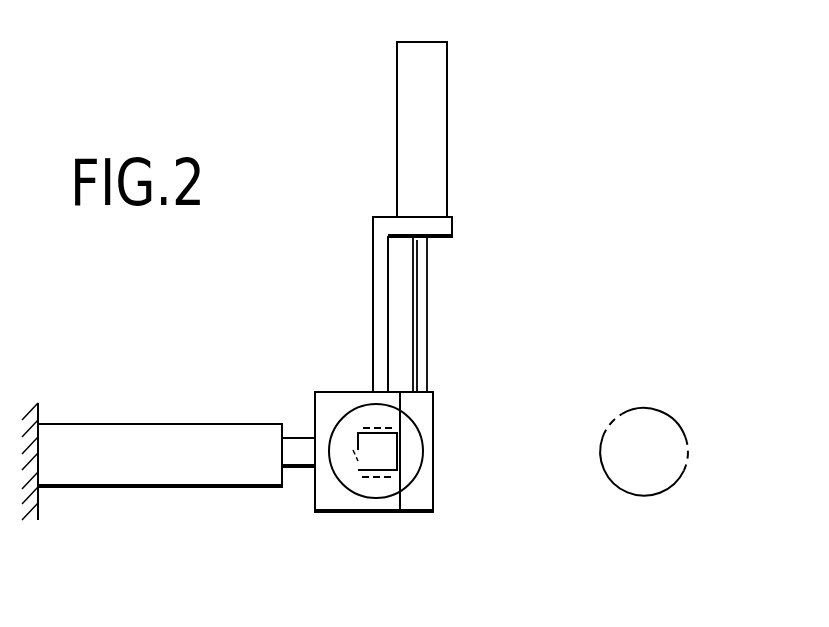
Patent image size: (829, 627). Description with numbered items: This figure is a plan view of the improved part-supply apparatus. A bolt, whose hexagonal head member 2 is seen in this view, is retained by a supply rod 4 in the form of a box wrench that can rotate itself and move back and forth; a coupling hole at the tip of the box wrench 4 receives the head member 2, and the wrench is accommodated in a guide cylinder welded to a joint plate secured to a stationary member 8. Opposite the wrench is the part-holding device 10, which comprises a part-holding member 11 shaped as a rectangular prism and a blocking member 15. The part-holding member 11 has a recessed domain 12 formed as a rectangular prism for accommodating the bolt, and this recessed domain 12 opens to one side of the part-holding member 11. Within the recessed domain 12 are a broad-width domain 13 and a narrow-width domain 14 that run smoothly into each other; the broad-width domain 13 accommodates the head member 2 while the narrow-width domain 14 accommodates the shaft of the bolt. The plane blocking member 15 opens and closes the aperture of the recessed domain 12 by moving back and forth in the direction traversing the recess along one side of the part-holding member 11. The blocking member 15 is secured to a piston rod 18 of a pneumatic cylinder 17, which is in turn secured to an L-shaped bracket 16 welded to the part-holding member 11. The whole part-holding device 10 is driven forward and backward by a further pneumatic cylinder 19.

The head member 2 is at (372, 478).
The supply rod 4 is at (647, 410).
The stationary member 8 is at (42, 458).
The part-holding device 10 is at (296, 517).
The part-holding member 11 is at (315, 514).
The recessed domain 12 is at (336, 443).
The broad-width domain 13 is at (362, 422).
The narrow-width domain 14 is at (384, 463).
The blocking member 15 is at (434, 421).
The L-shaped bracket 16 is at (373, 302).
The pneumatic cylinder 17 is at (397, 122).
The piston rod 18 is at (428, 300).
The pneumatic cylinder 19 is at (160, 424).